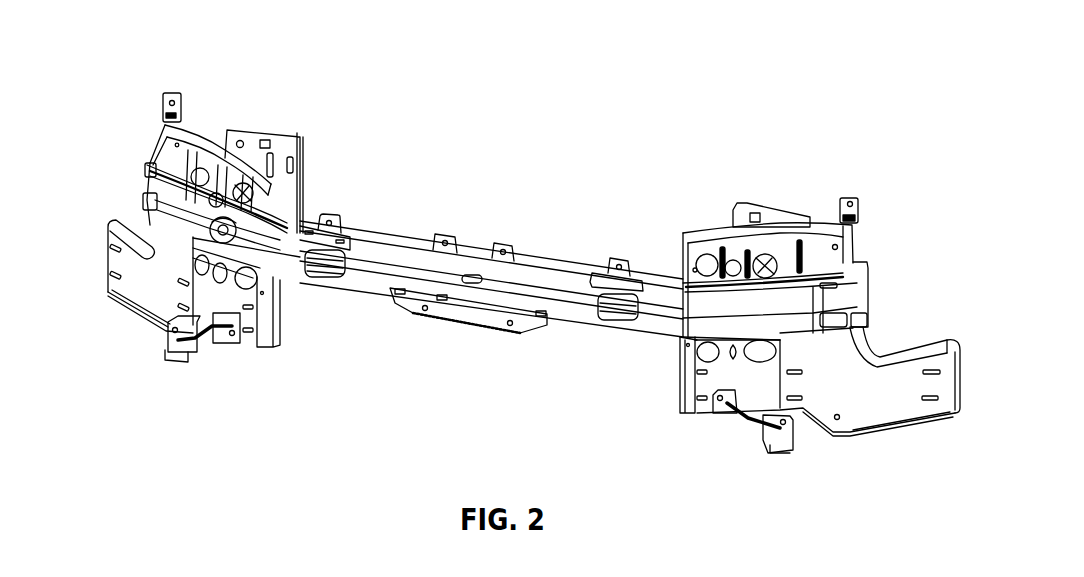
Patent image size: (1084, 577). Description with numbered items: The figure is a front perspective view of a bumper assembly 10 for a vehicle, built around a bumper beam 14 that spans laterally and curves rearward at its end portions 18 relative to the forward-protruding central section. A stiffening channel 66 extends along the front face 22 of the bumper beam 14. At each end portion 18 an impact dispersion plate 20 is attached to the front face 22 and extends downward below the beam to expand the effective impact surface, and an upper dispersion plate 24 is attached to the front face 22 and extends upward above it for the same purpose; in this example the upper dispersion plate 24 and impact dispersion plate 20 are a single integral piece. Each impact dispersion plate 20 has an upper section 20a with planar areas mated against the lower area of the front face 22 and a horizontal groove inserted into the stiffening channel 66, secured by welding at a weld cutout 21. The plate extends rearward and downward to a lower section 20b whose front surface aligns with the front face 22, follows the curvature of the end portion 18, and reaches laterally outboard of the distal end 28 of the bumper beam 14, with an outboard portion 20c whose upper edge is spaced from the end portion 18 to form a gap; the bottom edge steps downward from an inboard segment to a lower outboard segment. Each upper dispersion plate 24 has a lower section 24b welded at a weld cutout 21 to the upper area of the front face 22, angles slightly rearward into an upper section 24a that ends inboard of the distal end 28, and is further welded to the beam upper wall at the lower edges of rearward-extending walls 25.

The bumper assembly 10 is at (188, 60).
The bumper beam 14 is at (482, 241).
The end portions 18 is at (145, 146).
The impact dispersion plates 20 is at (150, 322).
The upper section 20a is at (268, 310).
The lower section 20b is at (284, 336).
The outboard portion 20c is at (103, 292).
The weld cutout 21 is at (152, 167).
The front face 22 is at (400, 270).
The upper dispersion plates 24 is at (212, 131).
The upper sections 24a is at (235, 150).
The lower section 24b is at (250, 242).
The walls 25 is at (277, 198).
The distal ends 28 is at (148, 207).
The stiffening channel 66 is at (357, 258).